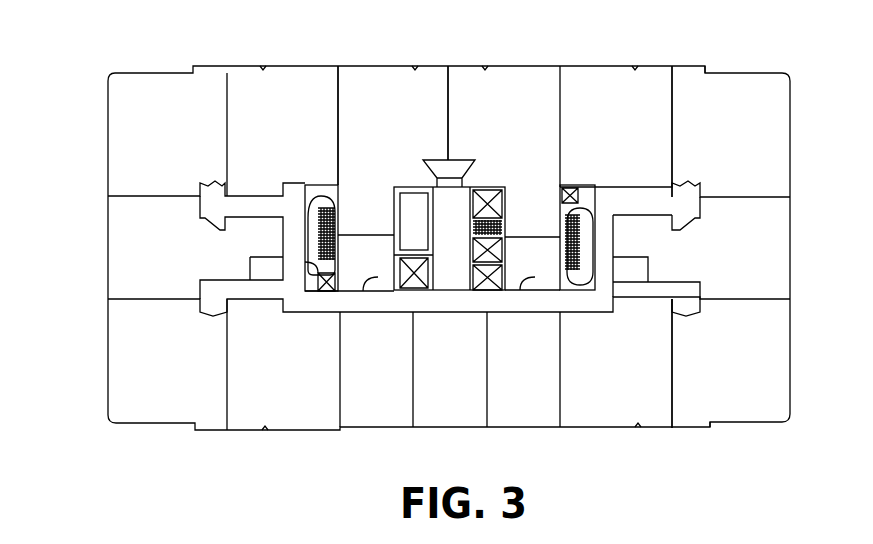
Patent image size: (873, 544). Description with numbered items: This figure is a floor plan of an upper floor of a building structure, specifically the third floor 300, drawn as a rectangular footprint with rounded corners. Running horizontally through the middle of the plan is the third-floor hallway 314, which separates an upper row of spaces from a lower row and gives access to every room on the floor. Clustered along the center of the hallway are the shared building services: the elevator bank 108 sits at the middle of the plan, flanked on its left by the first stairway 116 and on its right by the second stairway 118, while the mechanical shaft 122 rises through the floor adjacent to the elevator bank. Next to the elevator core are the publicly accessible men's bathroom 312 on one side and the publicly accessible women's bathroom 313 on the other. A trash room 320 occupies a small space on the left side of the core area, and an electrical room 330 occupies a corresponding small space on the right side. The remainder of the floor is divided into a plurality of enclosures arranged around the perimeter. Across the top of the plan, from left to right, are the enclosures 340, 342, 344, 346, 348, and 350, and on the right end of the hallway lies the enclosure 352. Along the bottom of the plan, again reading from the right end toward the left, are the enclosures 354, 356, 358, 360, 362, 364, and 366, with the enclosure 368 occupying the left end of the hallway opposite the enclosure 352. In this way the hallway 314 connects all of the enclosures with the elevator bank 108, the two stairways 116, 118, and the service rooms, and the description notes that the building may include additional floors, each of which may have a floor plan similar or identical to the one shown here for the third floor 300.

The third floor 300 is at (57, 29).
The elevator bank 108 is at (487, 212).
The first stairway 116 is at (315, 250).
The second stairway 118 is at (582, 255).
The mechanical shaft 122 is at (410, 222).
The publicly accessible men's bathroom 312 is at (368, 262).
The publicly accessible women's bathroom 313 is at (527, 267).
The third-floor hallway 314 is at (449, 248).
The trash room 320 is at (264, 277).
The electrical room 330 is at (628, 273).
The enclosure 340 is at (163, 138).
The enclosure 342 is at (298, 138).
The enclosure 344 is at (368, 137).
The enclosure 346 is at (512, 138).
The enclosure 348 is at (592, 138).
The enclosure 350 is at (742, 133).
The enclosure 352 is at (745, 257).
The enclosure 354 is at (713, 380).
The enclosure 356 is at (587, 380).
The enclosure 358 is at (528, 383).
The enclosure 360 is at (455, 377).
The enclosure 362 is at (383, 372).
The enclosure 364 is at (297, 372).
The enclosure 366 is at (163, 367).
The enclosure 368 is at (163, 262).